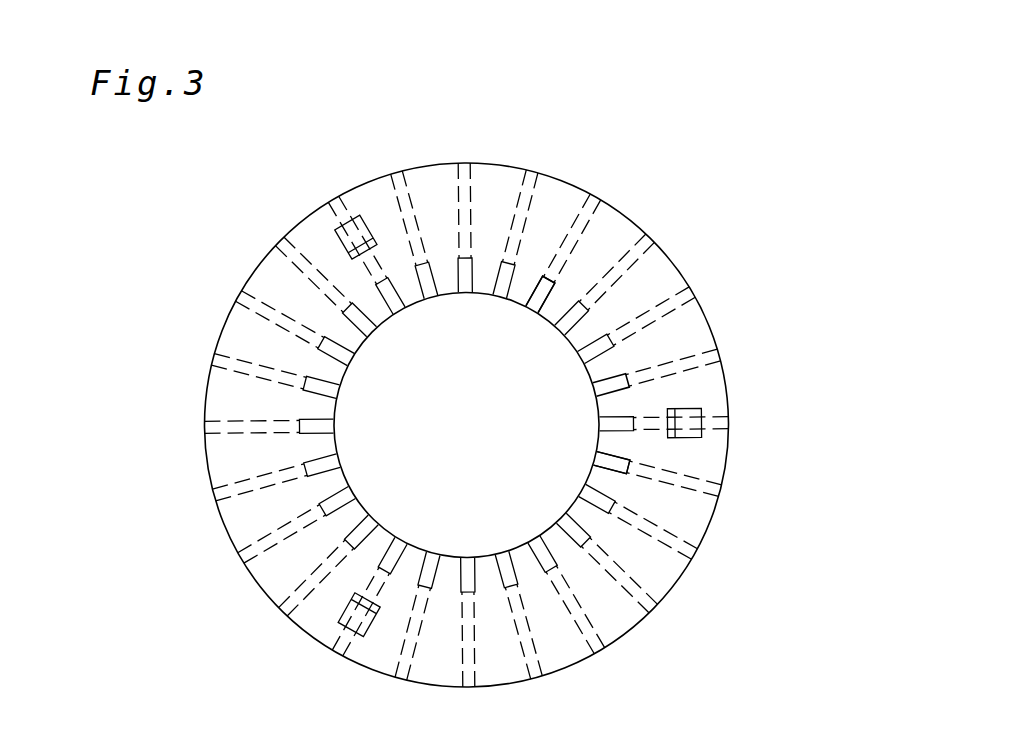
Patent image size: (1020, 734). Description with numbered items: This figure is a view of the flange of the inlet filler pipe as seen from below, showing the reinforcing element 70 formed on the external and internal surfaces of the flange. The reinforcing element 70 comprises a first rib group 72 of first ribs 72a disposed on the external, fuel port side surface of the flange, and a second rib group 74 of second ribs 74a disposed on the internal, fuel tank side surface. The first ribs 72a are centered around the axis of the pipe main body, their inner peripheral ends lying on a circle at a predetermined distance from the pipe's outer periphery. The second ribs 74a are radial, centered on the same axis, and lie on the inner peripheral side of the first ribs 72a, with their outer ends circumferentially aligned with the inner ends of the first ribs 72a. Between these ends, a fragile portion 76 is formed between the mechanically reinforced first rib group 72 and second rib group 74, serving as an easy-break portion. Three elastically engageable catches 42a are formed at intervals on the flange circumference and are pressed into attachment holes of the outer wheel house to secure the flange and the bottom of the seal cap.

The reinforcing element 70 is at (740, 142).
The second rib group 74 is at (565, 285).
The first rib group 72 is at (632, 262).
The first ribs 72a is at (688, 276).
The second ribs 74a is at (611, 380).
The elastically engageable catches 42a is at (694, 407).
The fragile portion 76 is at (632, 445).